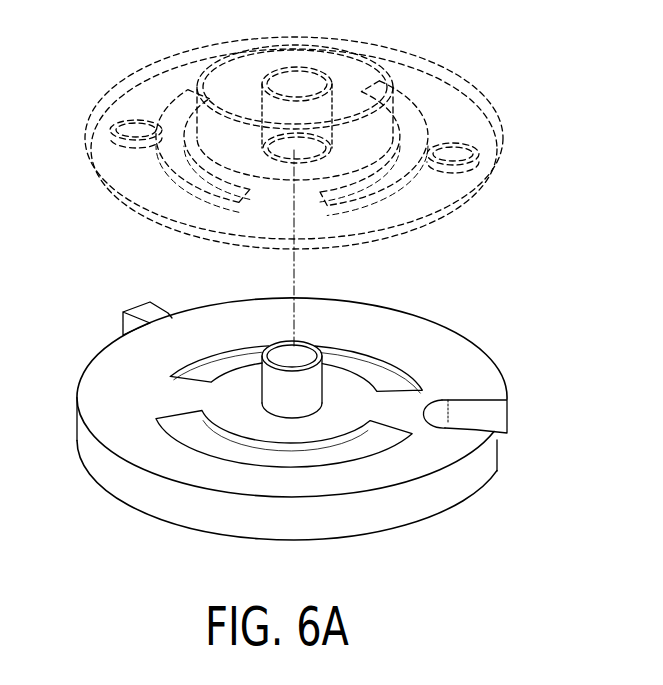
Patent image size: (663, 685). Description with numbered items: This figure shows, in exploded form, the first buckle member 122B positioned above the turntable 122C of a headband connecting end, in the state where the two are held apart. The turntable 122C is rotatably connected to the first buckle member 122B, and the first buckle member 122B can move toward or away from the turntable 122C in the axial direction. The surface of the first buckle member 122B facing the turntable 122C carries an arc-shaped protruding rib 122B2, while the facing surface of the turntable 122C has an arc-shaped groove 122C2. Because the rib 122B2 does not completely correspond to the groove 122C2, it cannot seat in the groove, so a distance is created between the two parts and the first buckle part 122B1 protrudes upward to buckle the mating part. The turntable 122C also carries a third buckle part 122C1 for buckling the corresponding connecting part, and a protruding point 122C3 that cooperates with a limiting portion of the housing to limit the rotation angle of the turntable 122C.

The first buckle member 122B is at (486, 95).
The first buckle part 122B1 is at (367, 72).
The arc-shaped protruding rib 122B2 is at (392, 200).
The turntable 122C is at (448, 493).
The third buckle part 122C1 is at (467, 418).
The arc-shaped groove 122C2 is at (220, 458).
The protruding point 122C3 is at (145, 312).